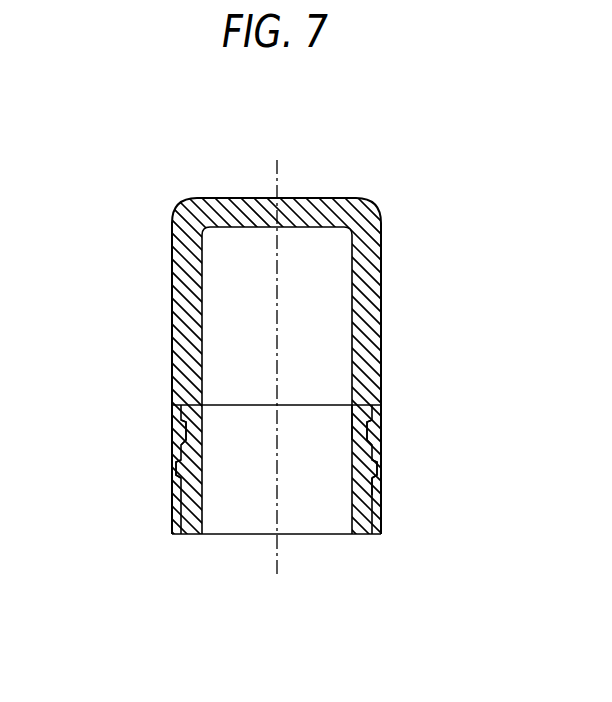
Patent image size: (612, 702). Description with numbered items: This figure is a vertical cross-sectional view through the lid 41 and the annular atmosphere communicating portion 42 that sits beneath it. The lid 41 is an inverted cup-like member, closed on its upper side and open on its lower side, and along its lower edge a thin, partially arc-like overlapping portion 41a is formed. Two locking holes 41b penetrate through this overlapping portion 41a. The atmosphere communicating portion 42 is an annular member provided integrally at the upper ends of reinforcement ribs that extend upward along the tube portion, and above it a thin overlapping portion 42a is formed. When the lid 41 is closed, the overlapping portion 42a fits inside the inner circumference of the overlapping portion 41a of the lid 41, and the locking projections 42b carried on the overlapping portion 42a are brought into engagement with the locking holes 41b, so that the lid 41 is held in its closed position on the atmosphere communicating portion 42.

The lid 41 is at (336, 197).
The overlapping portion 41a is at (379, 485).
The locking holes 41b is at (176, 433).
The atmosphere communicating portion 42 is at (387, 527).
The overlapping portion 42a is at (352, 432).
The locking projections 42b is at (176, 450).